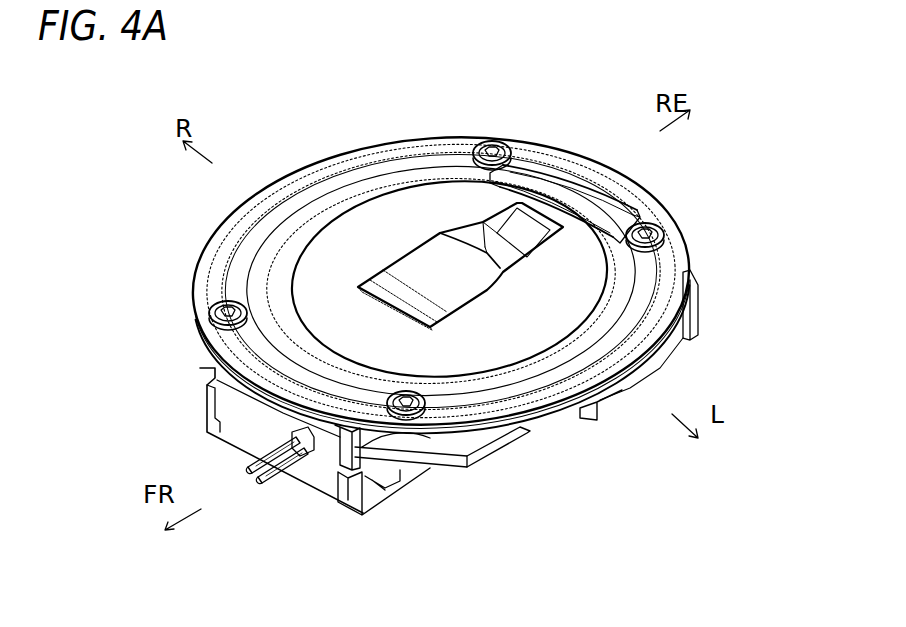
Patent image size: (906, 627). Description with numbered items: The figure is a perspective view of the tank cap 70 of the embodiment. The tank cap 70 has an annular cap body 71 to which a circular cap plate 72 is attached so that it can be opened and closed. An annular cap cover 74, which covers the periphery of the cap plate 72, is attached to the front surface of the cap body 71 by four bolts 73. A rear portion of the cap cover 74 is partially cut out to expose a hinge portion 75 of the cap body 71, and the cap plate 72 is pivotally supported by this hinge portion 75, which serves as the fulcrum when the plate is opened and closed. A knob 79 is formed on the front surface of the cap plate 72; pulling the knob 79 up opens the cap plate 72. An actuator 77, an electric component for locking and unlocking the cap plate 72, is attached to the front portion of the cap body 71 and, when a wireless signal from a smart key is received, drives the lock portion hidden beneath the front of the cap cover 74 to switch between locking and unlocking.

The tank cap 70 is at (256, 122).
The cap body 71 is at (713, 285).
The cap plate 72 is at (413, 202).
The bolts 73 is at (497, 150).
The cap cover 74 is at (333, 166).
The hinge portion 75 is at (585, 181).
The actuator 77 is at (315, 469).
The knob 79 is at (422, 259).